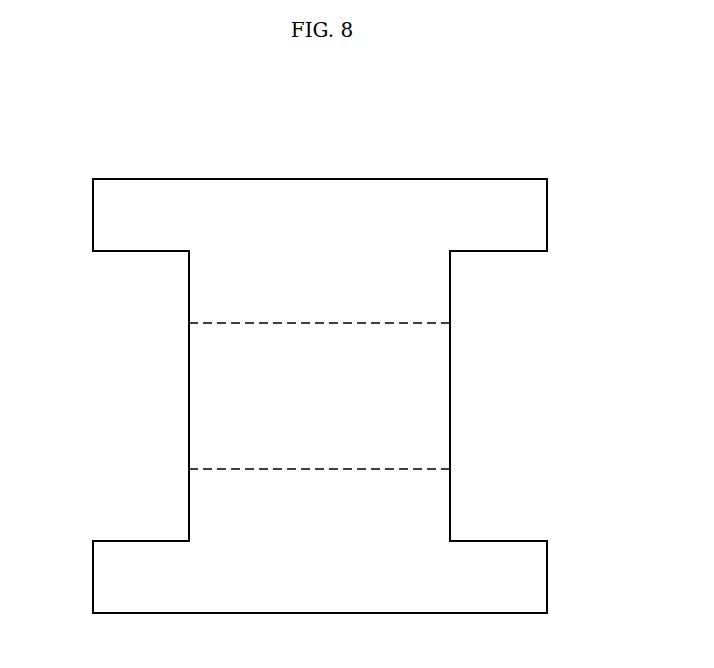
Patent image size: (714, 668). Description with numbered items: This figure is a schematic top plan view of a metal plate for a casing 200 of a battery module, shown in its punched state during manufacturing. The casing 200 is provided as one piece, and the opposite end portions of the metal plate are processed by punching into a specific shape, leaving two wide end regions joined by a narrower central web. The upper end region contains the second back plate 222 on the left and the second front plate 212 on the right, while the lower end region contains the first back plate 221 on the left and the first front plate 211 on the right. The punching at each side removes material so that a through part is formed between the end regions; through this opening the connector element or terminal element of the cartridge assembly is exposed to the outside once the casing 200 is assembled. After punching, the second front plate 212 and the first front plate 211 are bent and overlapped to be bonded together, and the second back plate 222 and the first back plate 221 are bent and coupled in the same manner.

The casing 200 is at (384, 139).
The second back plate 222 is at (97, 212).
The second front plate 212 is at (544, 212).
The first back plate 221 is at (97, 577).
The first front plate 211 is at (544, 577).